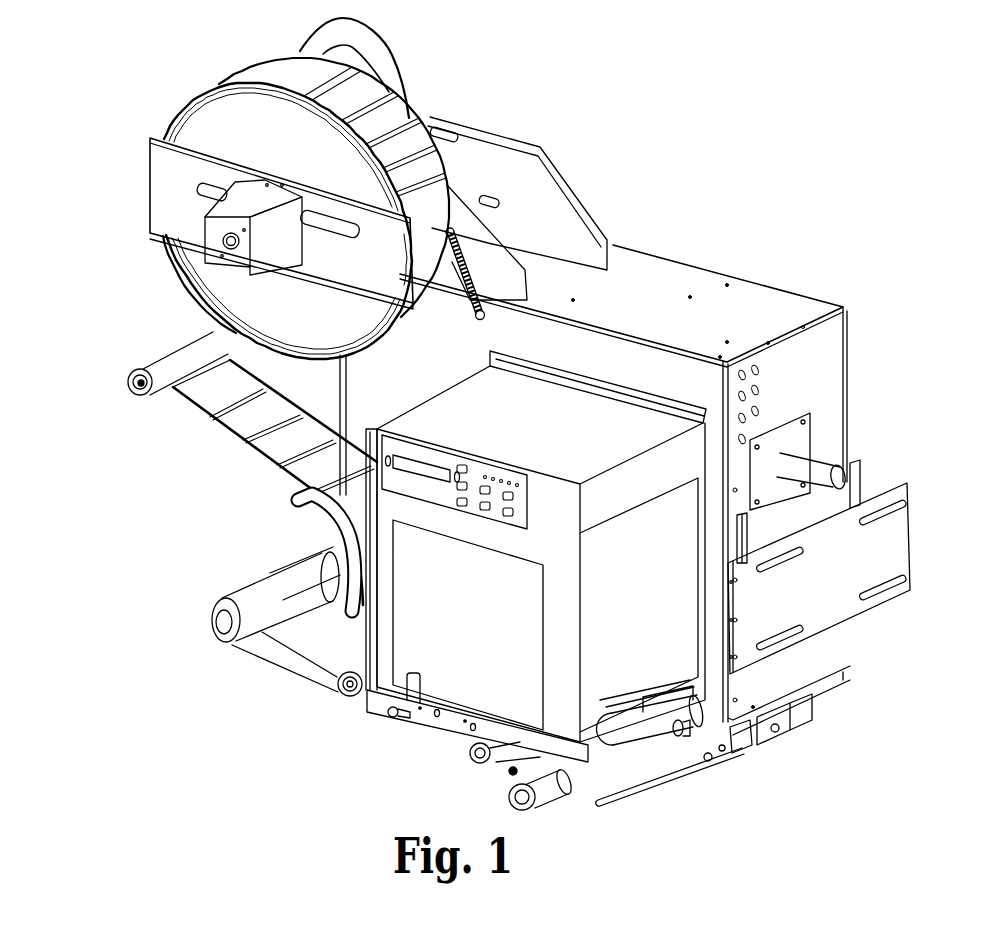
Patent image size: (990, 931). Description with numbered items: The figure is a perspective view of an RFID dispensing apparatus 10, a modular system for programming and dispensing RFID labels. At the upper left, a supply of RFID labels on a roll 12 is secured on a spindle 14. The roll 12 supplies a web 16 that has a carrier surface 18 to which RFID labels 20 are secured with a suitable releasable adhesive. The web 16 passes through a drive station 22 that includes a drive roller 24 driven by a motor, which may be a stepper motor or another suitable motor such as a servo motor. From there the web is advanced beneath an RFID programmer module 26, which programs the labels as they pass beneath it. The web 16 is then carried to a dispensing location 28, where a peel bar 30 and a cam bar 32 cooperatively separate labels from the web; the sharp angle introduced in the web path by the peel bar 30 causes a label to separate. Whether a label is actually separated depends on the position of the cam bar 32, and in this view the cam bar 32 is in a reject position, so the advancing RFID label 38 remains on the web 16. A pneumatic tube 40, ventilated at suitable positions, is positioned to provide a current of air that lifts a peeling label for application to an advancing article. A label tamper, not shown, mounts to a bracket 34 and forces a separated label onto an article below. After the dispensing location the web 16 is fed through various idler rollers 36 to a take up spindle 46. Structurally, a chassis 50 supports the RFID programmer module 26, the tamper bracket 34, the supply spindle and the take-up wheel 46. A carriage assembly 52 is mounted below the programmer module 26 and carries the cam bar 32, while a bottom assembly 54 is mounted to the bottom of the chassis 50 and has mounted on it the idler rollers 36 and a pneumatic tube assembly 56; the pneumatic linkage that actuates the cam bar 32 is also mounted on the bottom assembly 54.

The RFID dispensing apparatus 10 is at (827, 160).
The roll 12 is at (204, 98).
The spindle 14 is at (222, 245).
The web 16 is at (210, 418).
The carrier surface 18 is at (276, 468).
The RFID labels 20 is at (293, 485).
The drive station 22 is at (393, 727).
The drive roller 24 is at (337, 693).
The RFID programmer module 26 is at (448, 393).
The dispensing location 28 is at (598, 807).
The peel bar 30 is at (667, 697).
The cam bar 32 is at (674, 733).
The bracket 34 is at (893, 542).
The idler rollers 36 is at (510, 785).
The advancing RFID label 38 is at (638, 750).
The pneumatic tube 40 is at (618, 800).
The take up spindle 46 is at (257, 640).
The chassis 50 is at (834, 300).
The carriage assembly 52 is at (444, 734).
The bottom assembly 54 is at (832, 694).
The pneumatic tube assembly 56 is at (742, 755).